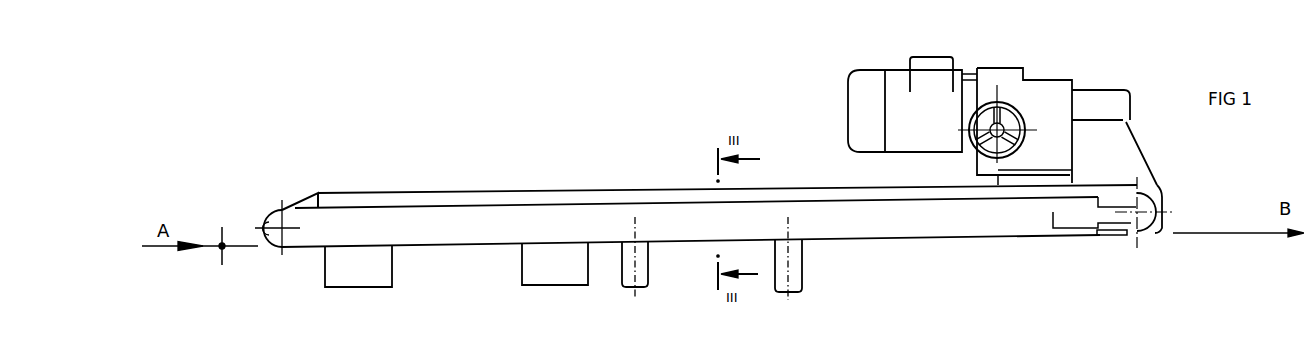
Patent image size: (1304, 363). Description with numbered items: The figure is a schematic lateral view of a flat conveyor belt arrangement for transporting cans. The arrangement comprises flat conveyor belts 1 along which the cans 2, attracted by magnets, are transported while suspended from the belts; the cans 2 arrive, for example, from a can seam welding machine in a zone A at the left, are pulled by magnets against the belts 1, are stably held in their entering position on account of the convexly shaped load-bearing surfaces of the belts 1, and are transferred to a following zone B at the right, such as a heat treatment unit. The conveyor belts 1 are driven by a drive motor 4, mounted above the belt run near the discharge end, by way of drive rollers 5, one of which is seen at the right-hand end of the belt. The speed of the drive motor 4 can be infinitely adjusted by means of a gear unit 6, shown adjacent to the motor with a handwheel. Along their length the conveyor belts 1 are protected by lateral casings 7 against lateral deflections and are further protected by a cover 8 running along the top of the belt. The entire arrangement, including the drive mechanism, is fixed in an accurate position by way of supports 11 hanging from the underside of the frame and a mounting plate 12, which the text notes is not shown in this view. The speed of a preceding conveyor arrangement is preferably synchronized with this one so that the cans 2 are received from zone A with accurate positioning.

The conveyor belt 1 is at (303, 248).
The can 2 is at (370, 288).
The drive motor 4 is at (903, 88).
The drive roller 5 is at (1162, 207).
The gear unit 6 is at (975, 152).
The lateral casing 7 is at (483, 230).
The cover 8 is at (505, 200).
The support 11 is at (633, 278).
The mounting plate 12 is at (735, 362).